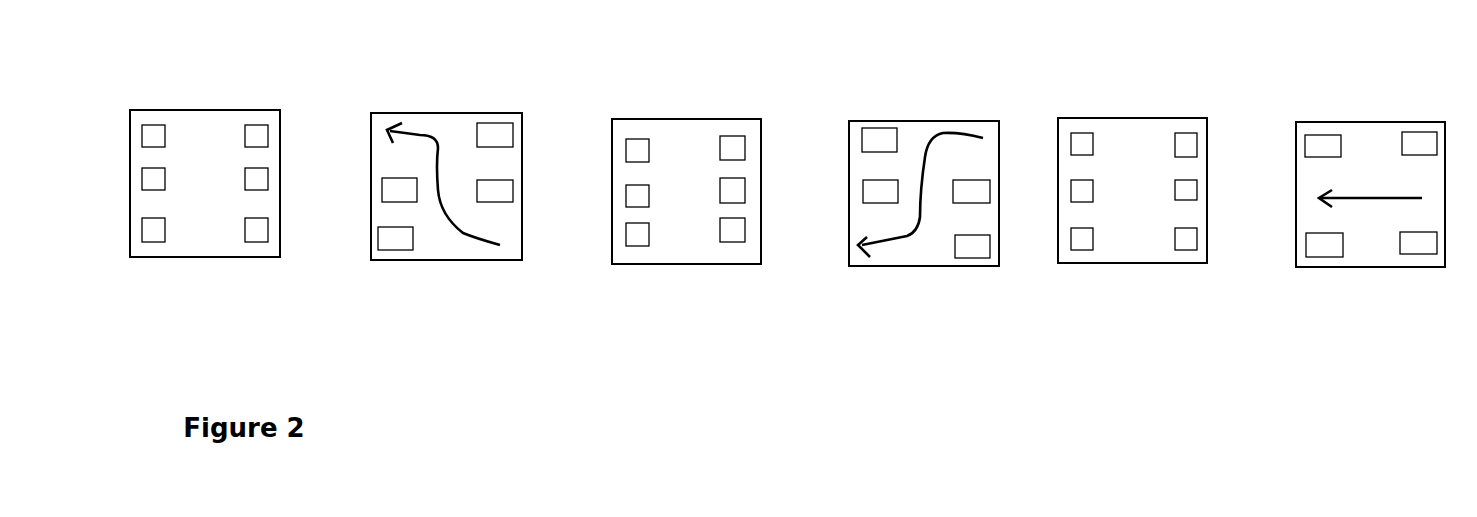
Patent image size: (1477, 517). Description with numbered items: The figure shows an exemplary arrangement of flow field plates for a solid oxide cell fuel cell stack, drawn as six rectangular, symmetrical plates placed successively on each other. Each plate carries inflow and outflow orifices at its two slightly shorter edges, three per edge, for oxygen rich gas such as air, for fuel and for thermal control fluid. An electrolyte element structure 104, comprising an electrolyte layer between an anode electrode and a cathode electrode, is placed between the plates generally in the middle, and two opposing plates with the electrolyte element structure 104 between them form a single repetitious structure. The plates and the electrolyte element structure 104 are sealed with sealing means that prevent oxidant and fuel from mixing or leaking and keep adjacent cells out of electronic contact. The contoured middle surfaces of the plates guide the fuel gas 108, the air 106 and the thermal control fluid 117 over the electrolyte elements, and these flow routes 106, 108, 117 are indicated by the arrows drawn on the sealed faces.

The electrolyte element structure 104 is at (687, 265).
The air flow route 106 is at (900, 240).
The fuel gas flow route 108 is at (462, 235).
The thermal control fluid flow route 117 is at (1358, 200).